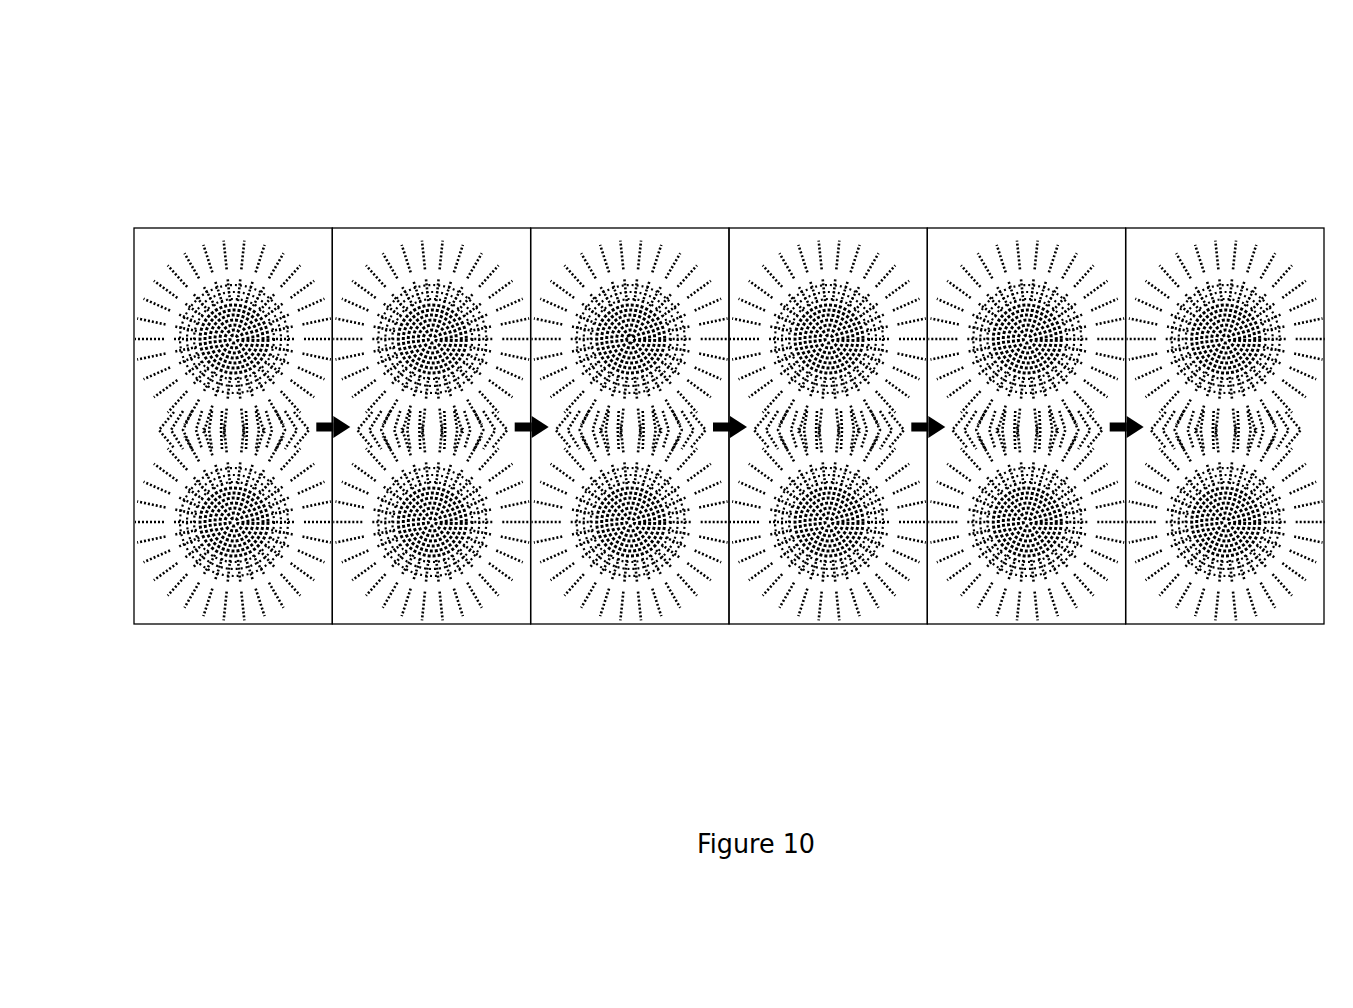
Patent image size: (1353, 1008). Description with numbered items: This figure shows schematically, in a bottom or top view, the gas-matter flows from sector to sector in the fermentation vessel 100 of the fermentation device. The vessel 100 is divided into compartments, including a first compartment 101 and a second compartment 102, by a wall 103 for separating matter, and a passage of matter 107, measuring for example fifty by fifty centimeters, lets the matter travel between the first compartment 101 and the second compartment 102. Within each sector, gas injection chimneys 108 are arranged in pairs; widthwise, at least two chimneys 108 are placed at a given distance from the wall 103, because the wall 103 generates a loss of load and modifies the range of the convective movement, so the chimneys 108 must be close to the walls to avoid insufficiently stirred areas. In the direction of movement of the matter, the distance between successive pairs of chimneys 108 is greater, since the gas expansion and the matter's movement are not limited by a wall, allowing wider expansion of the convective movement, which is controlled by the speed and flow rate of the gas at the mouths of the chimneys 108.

The fermentation vessel 100 is at (729, 406).
The first compartment 101 is at (362, 248).
The second compartment 102 is at (955, 248).
The wall for separating matter 103 is at (530, 250).
The passage of matter 107 is at (538, 440).
The gas injection chimneys 108 is at (632, 336).